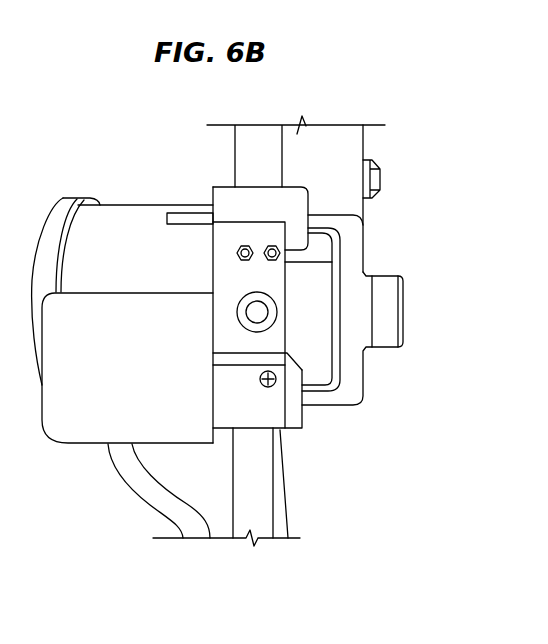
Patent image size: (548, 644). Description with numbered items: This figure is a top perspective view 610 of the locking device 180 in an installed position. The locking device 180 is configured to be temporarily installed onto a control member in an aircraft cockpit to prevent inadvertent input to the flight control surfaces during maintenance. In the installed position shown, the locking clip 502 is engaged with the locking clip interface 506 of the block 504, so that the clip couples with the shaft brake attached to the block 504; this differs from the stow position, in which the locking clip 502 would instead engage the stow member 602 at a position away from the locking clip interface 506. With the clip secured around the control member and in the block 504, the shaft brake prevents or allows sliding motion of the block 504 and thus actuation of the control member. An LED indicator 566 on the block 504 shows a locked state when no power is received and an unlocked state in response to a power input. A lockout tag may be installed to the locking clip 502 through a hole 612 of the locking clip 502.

The locking device 180 is at (128, 146).
The hole 612 is at (192, 218).
The block 504 is at (233, 278).
The LED indicator 566 is at (250, 311).
The locking clip 502 is at (355, 261).
The locking clip interface 506 is at (275, 412).
The stow member 602 is at (340, 169).
The top perspective view 610 is at (385, 473).